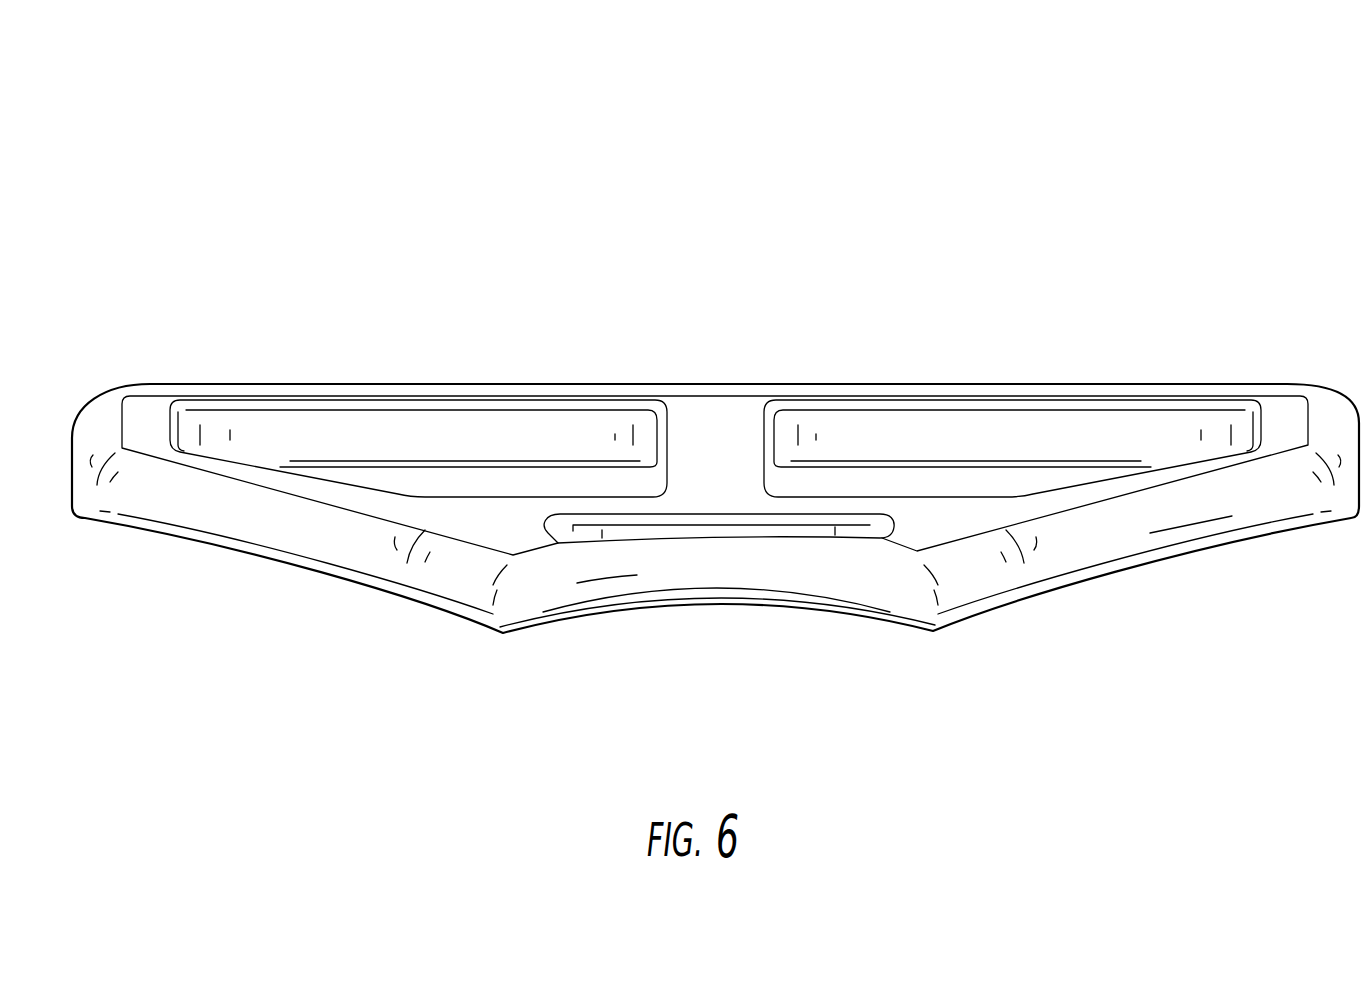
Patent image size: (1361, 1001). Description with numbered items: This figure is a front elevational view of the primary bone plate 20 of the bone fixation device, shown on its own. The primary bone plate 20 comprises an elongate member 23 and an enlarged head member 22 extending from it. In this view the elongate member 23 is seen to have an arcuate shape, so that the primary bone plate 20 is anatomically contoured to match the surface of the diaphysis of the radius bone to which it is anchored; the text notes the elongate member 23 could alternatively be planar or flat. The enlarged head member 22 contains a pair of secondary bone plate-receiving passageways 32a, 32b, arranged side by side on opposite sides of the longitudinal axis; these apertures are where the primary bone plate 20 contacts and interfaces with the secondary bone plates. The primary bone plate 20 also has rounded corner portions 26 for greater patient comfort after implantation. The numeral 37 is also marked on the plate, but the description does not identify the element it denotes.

The primary bone plate 20 is at (784, 150).
The enlarged head member 22 is at (259, 383).
The elongate member 23 is at (551, 630).
The rounded corner portions 26 is at (857, 527).
The secondary bone plate-receiving passageway 32a is at (490, 490).
The secondary bone plate-receiving passageway 32b is at (832, 482).
The central lower rim 37 is at (813, 614).